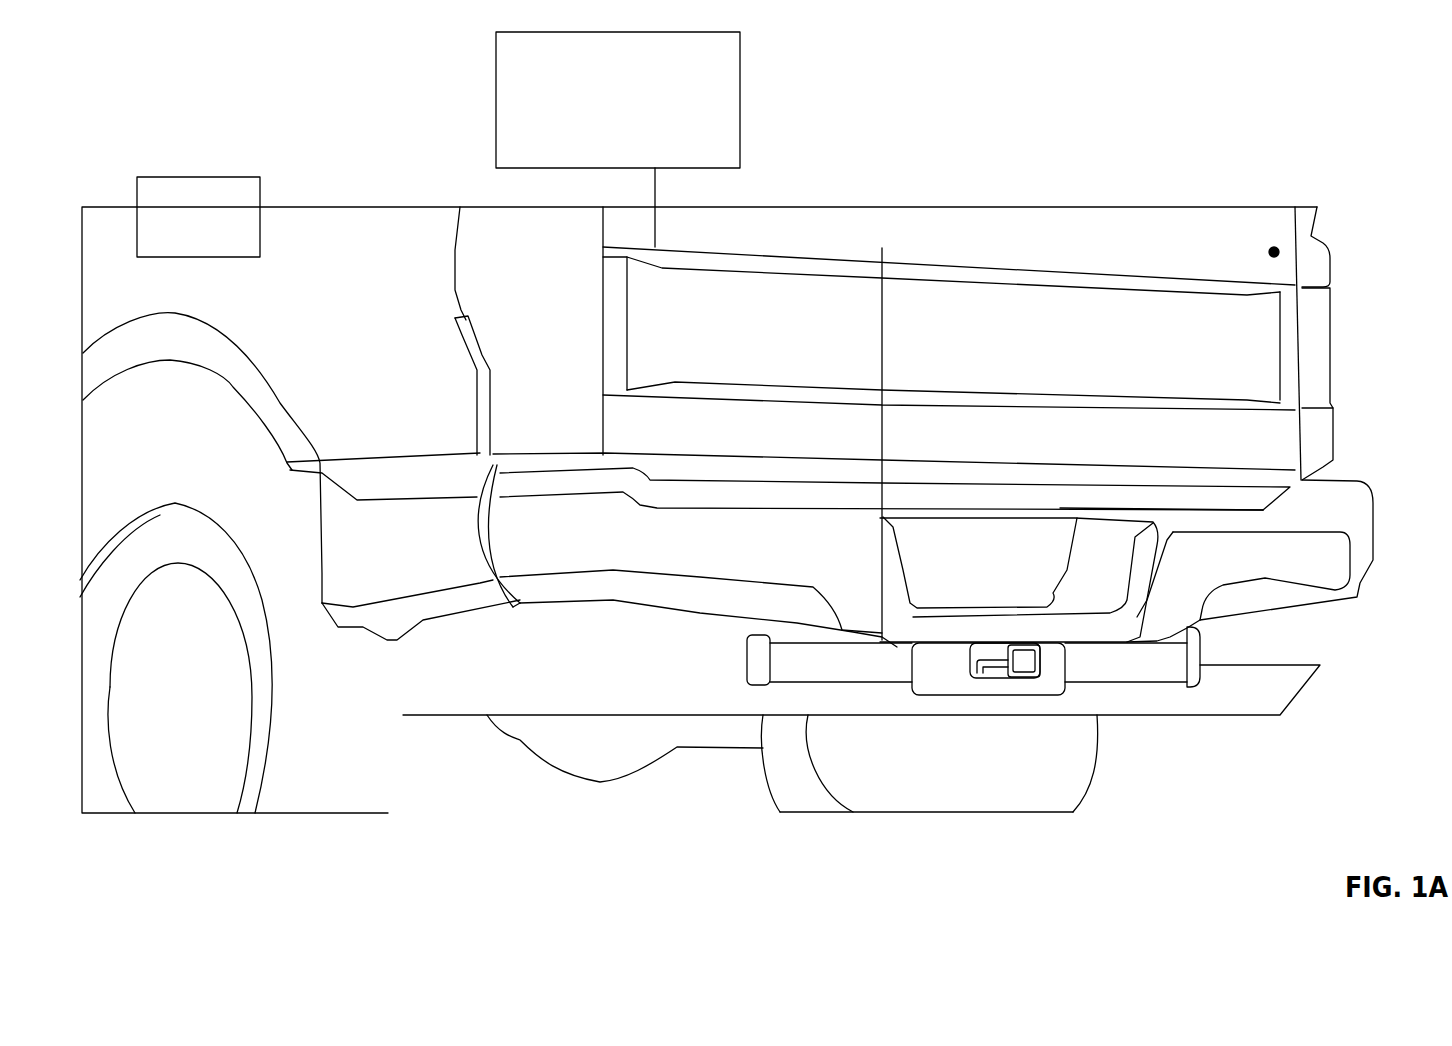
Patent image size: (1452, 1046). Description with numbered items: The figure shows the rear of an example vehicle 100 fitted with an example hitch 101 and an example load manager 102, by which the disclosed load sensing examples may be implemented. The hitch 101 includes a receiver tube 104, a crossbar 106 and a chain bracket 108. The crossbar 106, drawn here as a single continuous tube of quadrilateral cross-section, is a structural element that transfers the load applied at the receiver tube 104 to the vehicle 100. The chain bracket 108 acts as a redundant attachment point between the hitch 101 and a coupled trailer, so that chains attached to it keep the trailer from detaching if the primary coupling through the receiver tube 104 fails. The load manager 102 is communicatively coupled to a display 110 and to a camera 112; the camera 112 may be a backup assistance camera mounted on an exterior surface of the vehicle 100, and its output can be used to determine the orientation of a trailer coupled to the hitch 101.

The vehicle 100 is at (1253, 146).
The hitch 101 is at (1105, 715).
The load manager 102 is at (600, 125).
The receiver tube 104 is at (1017, 673).
The crossbar 106 is at (843, 652).
The chain bracket 108 is at (912, 690).
The display 110 is at (180, 241).
The camera 112 is at (1276, 250).